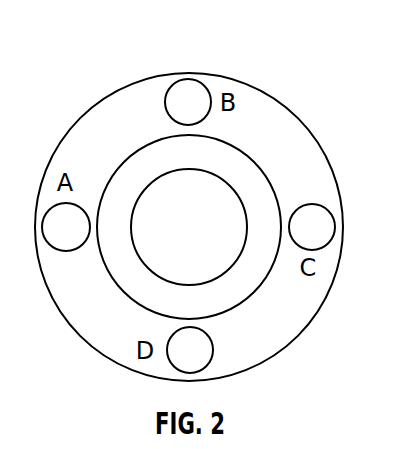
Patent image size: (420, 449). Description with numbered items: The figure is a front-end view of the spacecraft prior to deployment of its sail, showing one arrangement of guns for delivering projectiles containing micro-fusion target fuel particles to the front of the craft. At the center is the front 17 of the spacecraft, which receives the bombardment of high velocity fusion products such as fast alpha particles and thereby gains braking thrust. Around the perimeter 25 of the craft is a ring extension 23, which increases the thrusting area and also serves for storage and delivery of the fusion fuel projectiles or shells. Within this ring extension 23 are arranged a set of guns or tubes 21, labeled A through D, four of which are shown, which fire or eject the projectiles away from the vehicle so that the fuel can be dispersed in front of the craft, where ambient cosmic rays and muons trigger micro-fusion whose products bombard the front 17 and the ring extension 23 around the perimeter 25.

The front 17 is at (175, 238).
The guns or tubes 21 is at (188, 79).
The ring extension 23 is at (283, 347).
The perimeter 25 is at (232, 308).